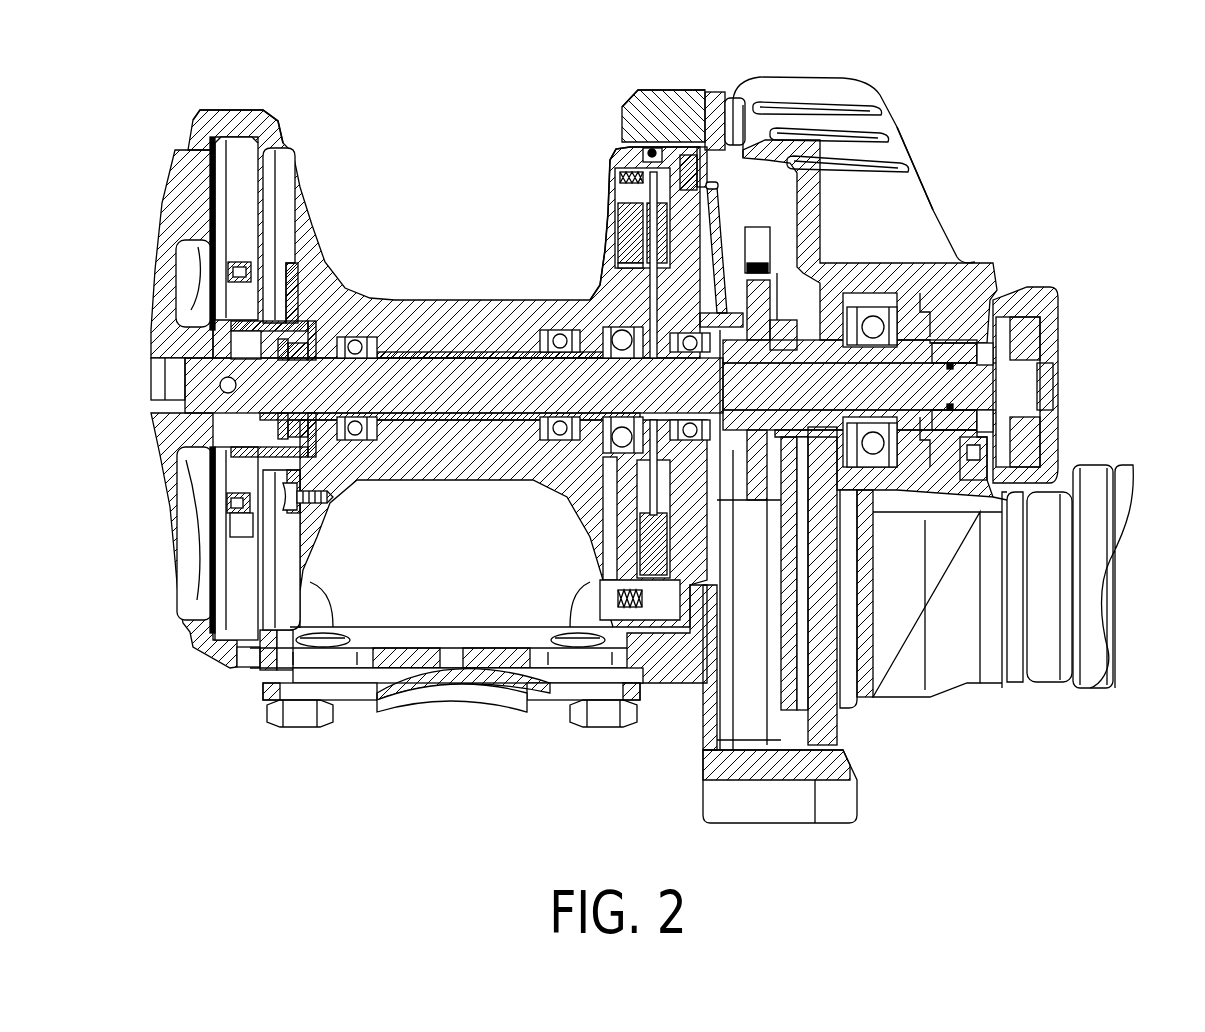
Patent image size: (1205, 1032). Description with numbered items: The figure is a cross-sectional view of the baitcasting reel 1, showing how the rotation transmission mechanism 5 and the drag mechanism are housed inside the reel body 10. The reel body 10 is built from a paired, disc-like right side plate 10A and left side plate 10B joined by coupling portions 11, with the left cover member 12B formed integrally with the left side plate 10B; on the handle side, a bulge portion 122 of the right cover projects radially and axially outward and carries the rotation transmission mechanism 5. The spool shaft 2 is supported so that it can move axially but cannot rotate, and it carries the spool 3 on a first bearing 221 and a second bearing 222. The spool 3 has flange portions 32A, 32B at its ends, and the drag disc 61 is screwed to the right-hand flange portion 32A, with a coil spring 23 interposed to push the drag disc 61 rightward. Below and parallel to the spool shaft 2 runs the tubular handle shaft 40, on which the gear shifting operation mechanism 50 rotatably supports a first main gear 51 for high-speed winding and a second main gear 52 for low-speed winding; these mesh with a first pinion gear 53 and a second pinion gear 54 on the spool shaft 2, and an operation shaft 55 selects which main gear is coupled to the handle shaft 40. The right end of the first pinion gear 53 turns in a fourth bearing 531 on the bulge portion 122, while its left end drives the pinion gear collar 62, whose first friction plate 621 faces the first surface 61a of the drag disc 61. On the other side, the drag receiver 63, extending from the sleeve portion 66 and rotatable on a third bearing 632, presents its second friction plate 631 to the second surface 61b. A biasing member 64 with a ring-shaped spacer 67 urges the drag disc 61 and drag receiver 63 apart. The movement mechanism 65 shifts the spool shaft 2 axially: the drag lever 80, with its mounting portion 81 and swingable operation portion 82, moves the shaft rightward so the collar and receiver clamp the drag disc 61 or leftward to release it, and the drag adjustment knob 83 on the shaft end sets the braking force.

The baitcasting reel 1 is at (1075, 121).
The spool shaft 2 is at (465, 385).
The spool 3 is at (418, 297).
The rotation transmission mechanism 5 is at (963, 697).
The reel body 10 is at (656, 90).
The right side plate 10A is at (688, 95).
The left side plate 10B is at (250, 107).
The coupling portions 11 is at (340, 663).
The left cover member 12B is at (172, 175).
The coil spring 23 is at (623, 172).
The flange portion 32A is at (580, 627).
The flange portion 32B is at (333, 580).
The handle shaft 40 is at (1000, 683).
The gear shifting operation mechanism 50 is at (840, 543).
The first main gear 51 is at (827, 720).
The second main gear 52 is at (790, 683).
The first pinion gear 53 is at (950, 417).
The second pinion gear 54 is at (790, 333).
The operation shaft 55 is at (957, 620).
The drag disc 61 is at (657, 227).
The first surface 61a is at (657, 247).
The second surface 61b is at (655, 213).
The pinion gear collar 62 is at (700, 232).
The drag receiver 63 is at (630, 290).
The biasing member 64 is at (310, 330).
The movement mechanism 65 is at (943, 473).
The sleeve portion 66 is at (450, 470).
The spacer 67 is at (290, 450).
The drag lever 80 is at (872, 88).
The mounting portion 81 is at (985, 266).
The operation portion 82 is at (917, 167).
The drag adjustment knob 83 is at (1060, 310).
The bulge portion 122 is at (863, 777).
The first bearing 221 is at (297, 493).
The second bearing 222 is at (557, 470).
The fourth bearing 531 is at (687, 620).
The first friction plate 621 is at (667, 203).
The second friction plate 631 is at (643, 253).
The third bearing 632 is at (600, 470).